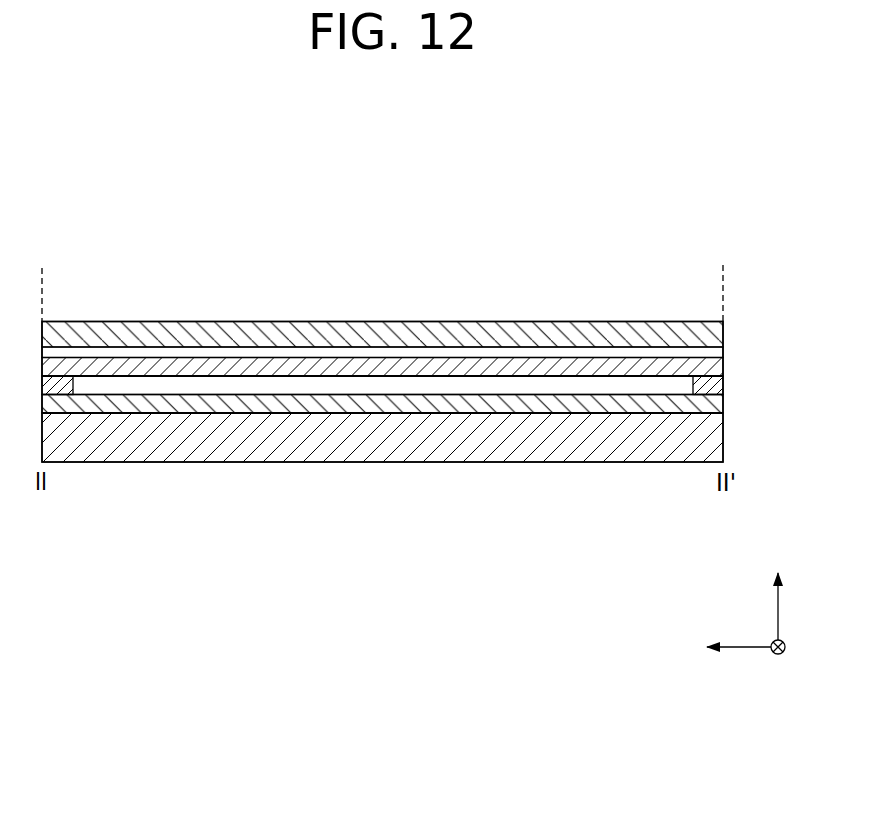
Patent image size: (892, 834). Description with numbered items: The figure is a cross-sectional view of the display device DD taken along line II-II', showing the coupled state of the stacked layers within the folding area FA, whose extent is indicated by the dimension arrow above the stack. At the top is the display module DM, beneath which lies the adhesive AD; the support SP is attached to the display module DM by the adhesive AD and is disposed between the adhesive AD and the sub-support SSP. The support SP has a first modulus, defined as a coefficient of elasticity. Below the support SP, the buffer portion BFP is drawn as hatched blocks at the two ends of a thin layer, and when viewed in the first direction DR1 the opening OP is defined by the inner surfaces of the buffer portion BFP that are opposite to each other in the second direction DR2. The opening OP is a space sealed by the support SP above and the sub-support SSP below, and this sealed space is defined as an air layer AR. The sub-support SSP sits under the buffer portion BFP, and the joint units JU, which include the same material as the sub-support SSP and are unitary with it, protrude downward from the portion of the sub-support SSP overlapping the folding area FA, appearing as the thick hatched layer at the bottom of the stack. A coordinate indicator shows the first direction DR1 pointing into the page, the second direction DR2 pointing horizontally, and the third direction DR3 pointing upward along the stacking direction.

The display device DD is at (643, 232).
The display module DM is at (712, 333).
The adhesive AD is at (711, 350).
The support SP is at (708, 368).
The buffer portion BFP is at (707, 387).
The opening OP is at (205, 388).
The air layer AR is at (278, 385).
The sub-support SSP is at (710, 403).
The joint units JU is at (712, 438).
The folding area FA is at (723, 272).
The first direction DR1 is at (778, 661).
The second direction DR2 is at (716, 647).
The third direction DR3 is at (778, 594).